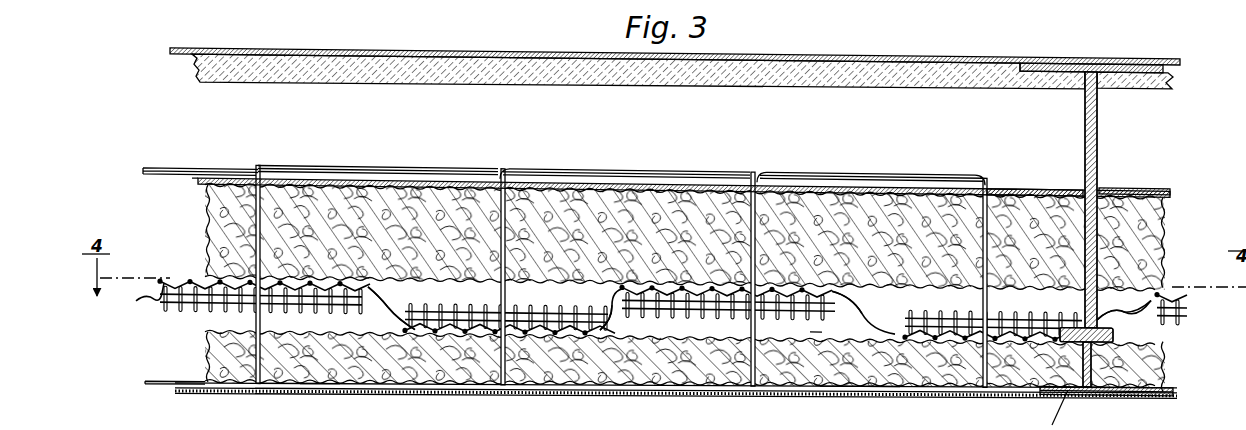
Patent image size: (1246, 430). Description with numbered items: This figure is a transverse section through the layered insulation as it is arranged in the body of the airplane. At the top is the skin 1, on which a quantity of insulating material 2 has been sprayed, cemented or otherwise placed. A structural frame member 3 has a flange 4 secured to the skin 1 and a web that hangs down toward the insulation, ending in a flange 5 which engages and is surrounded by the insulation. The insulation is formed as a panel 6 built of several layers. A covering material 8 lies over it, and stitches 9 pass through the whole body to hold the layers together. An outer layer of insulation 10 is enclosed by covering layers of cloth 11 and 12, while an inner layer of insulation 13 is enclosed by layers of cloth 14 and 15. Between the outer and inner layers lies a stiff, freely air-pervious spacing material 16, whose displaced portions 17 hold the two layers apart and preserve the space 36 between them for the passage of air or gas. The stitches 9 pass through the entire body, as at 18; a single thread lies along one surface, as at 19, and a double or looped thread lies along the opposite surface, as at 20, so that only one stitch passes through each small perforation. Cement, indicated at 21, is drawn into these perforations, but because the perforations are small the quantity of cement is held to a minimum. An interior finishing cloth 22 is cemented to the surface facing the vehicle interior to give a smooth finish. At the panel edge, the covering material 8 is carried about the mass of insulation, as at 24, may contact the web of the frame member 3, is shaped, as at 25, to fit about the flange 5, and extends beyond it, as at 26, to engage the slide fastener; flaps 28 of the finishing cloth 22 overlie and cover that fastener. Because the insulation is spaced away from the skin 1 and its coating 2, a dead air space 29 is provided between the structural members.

The skin 1 is at (255, 50).
The insulating material 2 is at (437, 66).
The frame member 3 is at (1098, 144).
The flange 4 is at (1110, 66).
The flange 5 is at (1094, 322).
The panel 6 is at (320, 399).
The covering material 8 is at (1017, 189).
The stitches 9 is at (224, 168).
The outer layer of insulation 10 is at (601, 186).
The covering layer of cloth 11 is at (165, 188).
The covering layer of cloth 12 is at (598, 310).
The inner layer of insulation 13 is at (612, 371).
The layer of cloth 14 is at (335, 340).
The layer of cloth 15 is at (165, 377).
The spacing material 16 is at (374, 310).
The displaced portions 17 is at (188, 285).
The stitch passage through insulation 18 is at (741, 215).
The single thread 19 is at (163, 384).
The double or looped thread 20 is at (337, 165).
The cement 21 is at (514, 205).
The interior finishing cloth 22 is at (857, 393).
The edge portion of covering material 24 is at (1062, 198).
The shaped portion of edge cloth 25 is at (1073, 319).
The extension of edge cloth 26 is at (1040, 388).
The flaps 28 is at (1098, 400).
The dead air space 29 is at (817, 105).
The space between layers of insulation 36 is at (821, 332).